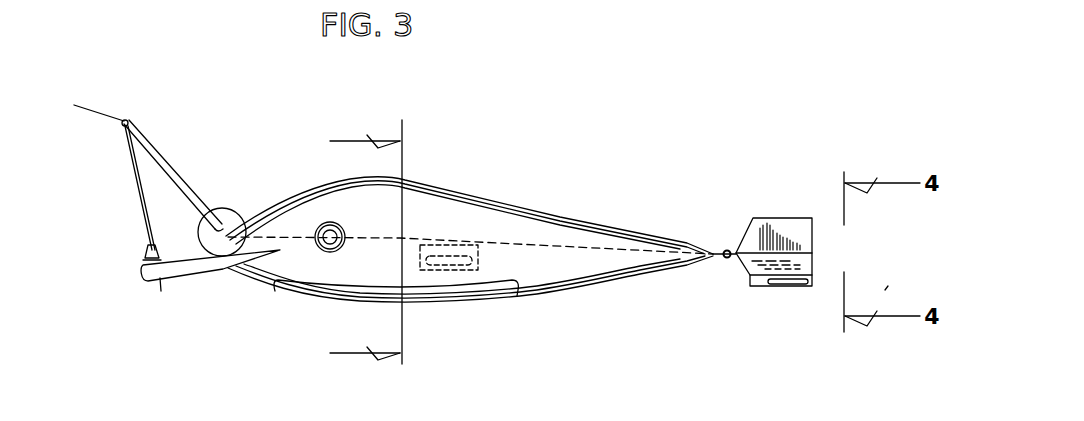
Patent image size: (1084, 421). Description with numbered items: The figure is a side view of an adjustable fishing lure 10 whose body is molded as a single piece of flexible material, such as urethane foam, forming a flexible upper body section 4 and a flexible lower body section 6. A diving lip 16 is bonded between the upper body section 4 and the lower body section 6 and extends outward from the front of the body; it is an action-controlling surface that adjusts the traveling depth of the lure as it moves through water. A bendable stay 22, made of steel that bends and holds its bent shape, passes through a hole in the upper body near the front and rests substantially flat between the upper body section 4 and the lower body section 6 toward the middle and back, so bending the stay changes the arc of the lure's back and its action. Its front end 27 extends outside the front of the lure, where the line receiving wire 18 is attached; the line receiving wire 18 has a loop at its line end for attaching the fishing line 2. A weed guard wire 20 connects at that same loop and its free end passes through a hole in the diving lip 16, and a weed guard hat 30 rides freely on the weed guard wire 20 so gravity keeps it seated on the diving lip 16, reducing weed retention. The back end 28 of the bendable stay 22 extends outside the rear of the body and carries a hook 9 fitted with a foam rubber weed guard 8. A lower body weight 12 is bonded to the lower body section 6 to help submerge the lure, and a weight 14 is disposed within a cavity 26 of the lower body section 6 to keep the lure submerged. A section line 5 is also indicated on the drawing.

The fishing line 2 is at (100, 112).
The upper body section 4 is at (515, 203).
The section line 5 is at (353, 245).
The lower body section 6 is at (572, 290).
The foam rubber weed guard 8 is at (798, 218).
The hook 9 is at (794, 284).
The adjustable fishing lure 10 is at (469, 200).
The lower body weight 12 is at (434, 305).
The weight 14 is at (473, 268).
The diving lip 16 is at (190, 272).
The line receiving wire 18 is at (165, 178).
The weed guard wire 20 is at (138, 176).
The bendable stay 22 is at (547, 244).
The cavity 26 is at (435, 246).
The front end 27 is at (222, 225).
The back end 28 is at (728, 258).
The weed guard hat 30 is at (113, 250).